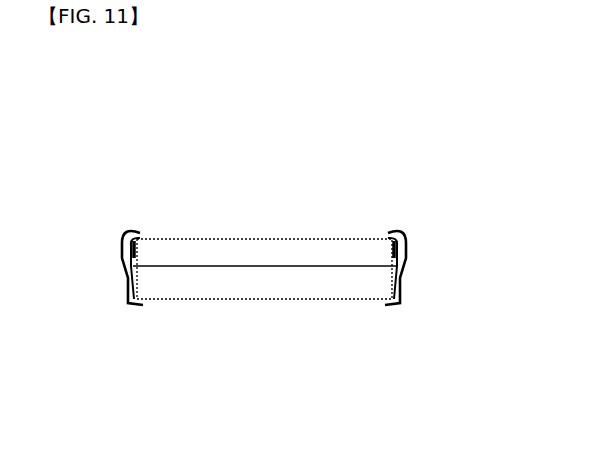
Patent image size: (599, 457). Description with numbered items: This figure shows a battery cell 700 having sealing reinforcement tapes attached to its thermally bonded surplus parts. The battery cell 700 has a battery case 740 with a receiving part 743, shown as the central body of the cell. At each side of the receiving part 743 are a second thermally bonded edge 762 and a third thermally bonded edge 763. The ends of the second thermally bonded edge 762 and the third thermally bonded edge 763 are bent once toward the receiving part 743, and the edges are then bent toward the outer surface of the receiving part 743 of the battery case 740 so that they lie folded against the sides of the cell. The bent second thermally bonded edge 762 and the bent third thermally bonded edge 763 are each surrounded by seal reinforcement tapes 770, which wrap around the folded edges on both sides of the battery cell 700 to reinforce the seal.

The battery cell 700 is at (97, 128).
The battery case 740 is at (351, 222).
The receiving part 743 is at (246, 239).
The second thermally bonded edge 762 is at (130, 237).
The third thermally bonded edge 763 is at (398, 232).
The seal reinforcement tapes 770 is at (120, 260).